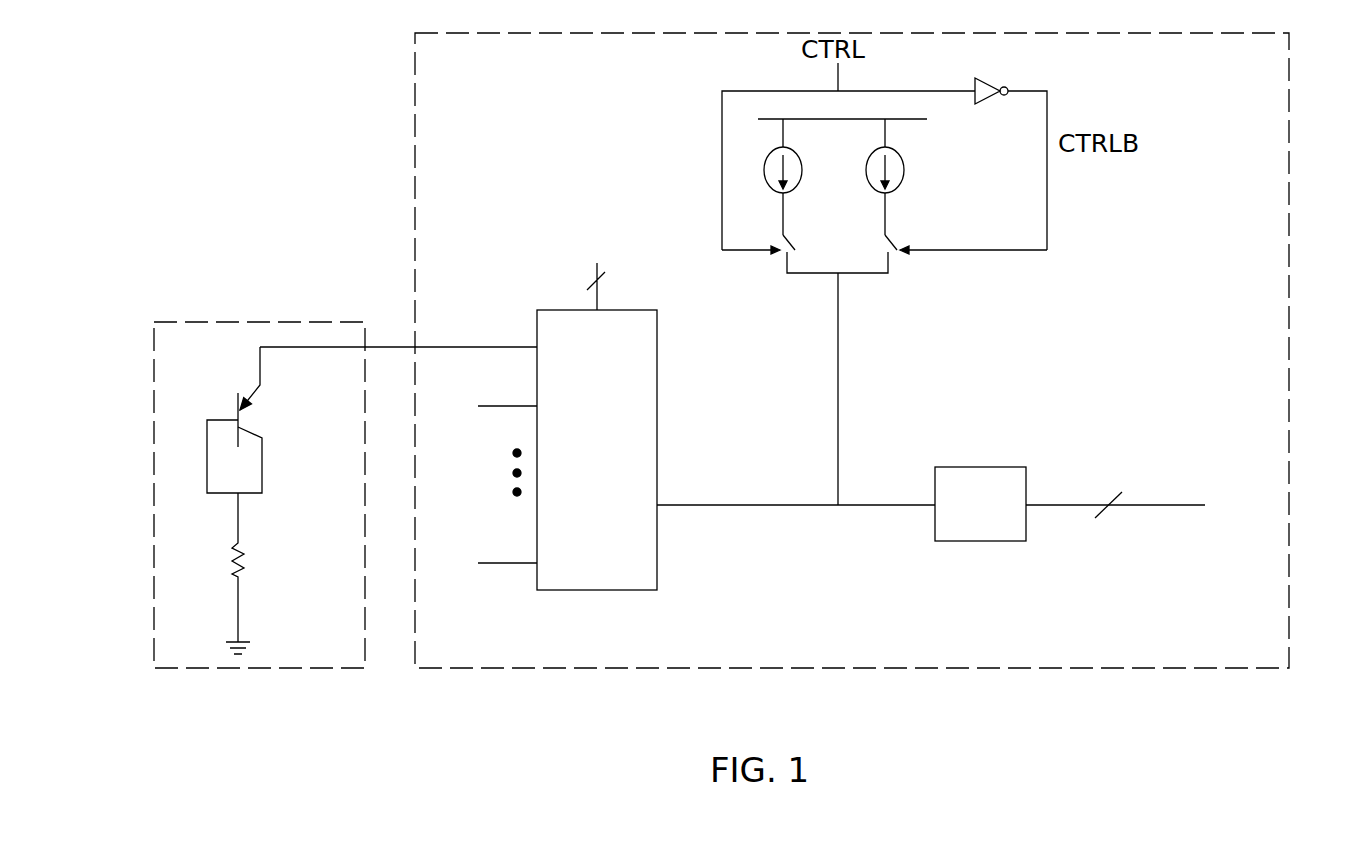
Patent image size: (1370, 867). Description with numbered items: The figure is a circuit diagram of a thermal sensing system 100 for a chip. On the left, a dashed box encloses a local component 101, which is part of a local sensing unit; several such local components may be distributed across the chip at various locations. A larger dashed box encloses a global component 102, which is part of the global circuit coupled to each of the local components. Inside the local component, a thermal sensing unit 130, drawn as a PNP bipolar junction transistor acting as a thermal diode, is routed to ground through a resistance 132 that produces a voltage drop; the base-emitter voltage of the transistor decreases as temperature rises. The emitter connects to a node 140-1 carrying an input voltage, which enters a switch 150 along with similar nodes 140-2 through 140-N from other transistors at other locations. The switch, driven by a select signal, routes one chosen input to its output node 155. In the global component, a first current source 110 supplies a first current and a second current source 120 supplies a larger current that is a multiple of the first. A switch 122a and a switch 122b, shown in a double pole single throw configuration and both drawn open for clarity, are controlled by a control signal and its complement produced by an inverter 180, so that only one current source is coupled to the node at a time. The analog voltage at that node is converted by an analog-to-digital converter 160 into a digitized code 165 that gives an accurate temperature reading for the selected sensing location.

The thermal sensing system 100 is at (186, 121).
The local component 101 is at (203, 322).
The global component 102 is at (1289, 136).
The first current source 110 is at (798, 190).
The second current source 120 is at (900, 190).
The switch 122a is at (790, 246).
The switch 122b is at (892, 246).
The thermal sensing unit 130 is at (255, 423).
The resistance 132 is at (225, 561).
The node 140-1 is at (497, 350).
The node 140-2 is at (497, 409).
The node 140-N is at (515, 565).
The switch 150 is at (597, 590).
The node 155 is at (710, 505).
The analog-to-digital converter 160 is at (980, 541).
The digitized code 165 is at (1165, 504).
The inverter 180 is at (990, 80).